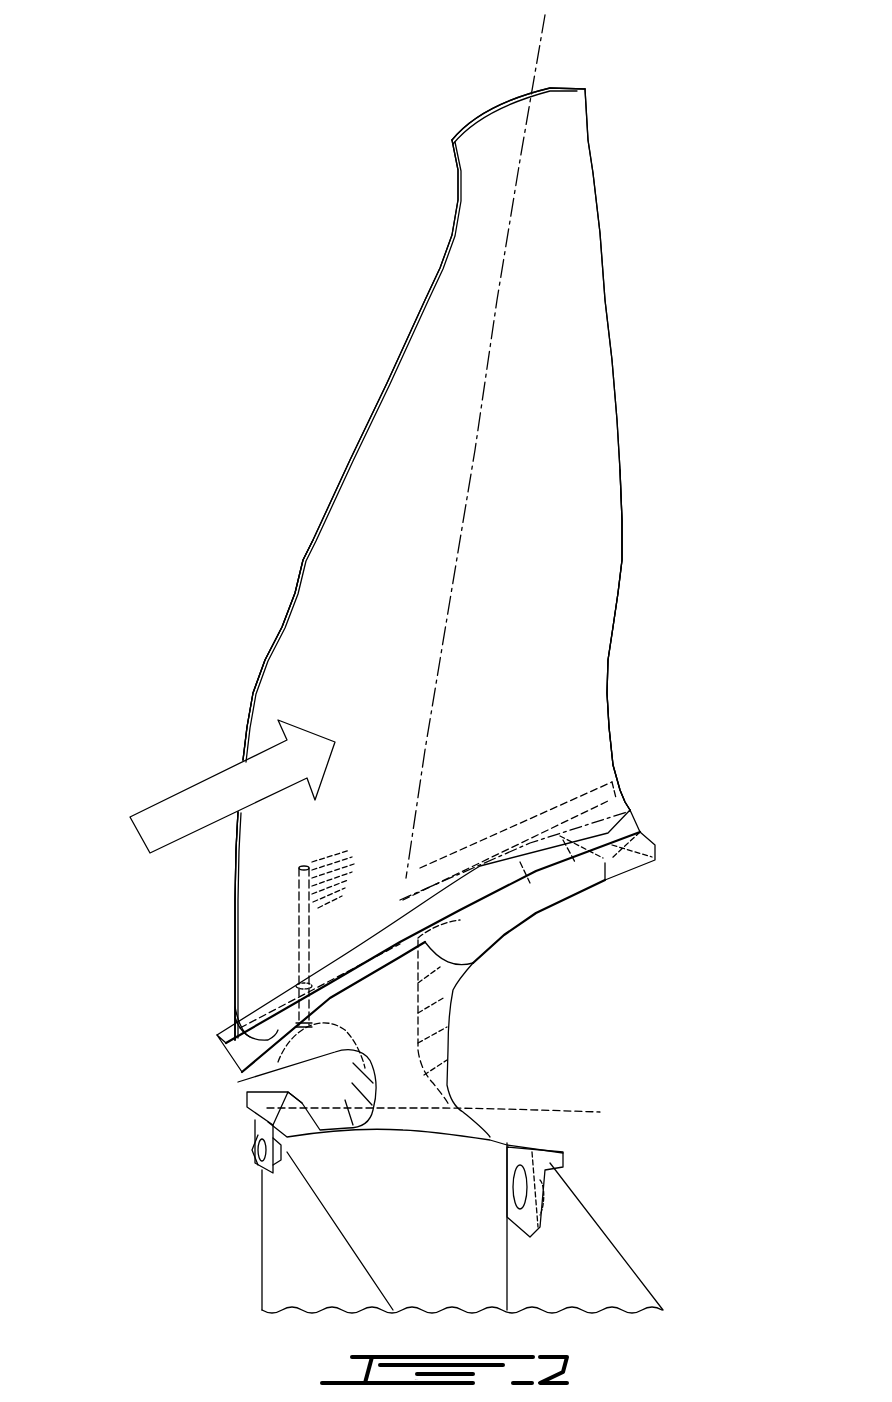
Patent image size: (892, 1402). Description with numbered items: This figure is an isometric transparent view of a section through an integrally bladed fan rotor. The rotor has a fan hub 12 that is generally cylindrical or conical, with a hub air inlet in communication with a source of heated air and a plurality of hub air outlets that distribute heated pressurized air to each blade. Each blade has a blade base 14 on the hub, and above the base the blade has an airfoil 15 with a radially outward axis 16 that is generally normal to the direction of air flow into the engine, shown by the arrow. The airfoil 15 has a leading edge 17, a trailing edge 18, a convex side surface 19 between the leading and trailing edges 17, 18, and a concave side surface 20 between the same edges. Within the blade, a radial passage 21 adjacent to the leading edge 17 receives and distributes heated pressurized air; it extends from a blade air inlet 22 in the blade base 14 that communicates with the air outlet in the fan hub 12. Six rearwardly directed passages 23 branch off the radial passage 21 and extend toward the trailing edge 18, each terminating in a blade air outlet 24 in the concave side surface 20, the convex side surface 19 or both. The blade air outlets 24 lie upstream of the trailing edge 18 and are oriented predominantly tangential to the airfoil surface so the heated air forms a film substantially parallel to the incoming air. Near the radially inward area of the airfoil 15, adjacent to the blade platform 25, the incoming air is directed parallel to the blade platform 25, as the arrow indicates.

The fan hub 12 is at (593, 1277).
The blade base 14 is at (437, 1020).
The airfoil 15 is at (503, 562).
The radially outward axis 16 is at (483, 398).
The leading edge 17 is at (308, 548).
The trailing edge 18 is at (596, 175).
The convex side surface 19 is at (480, 113).
The concave side surface 20 is at (487, 690).
The radial passage 21 is at (300, 927).
The blade air inlet 22 is at (300, 1030).
The rearwardly directed passages 23 is at (327, 857).
The blade air outlet 24 is at (436, 927).
The blade platform 25 is at (475, 963).